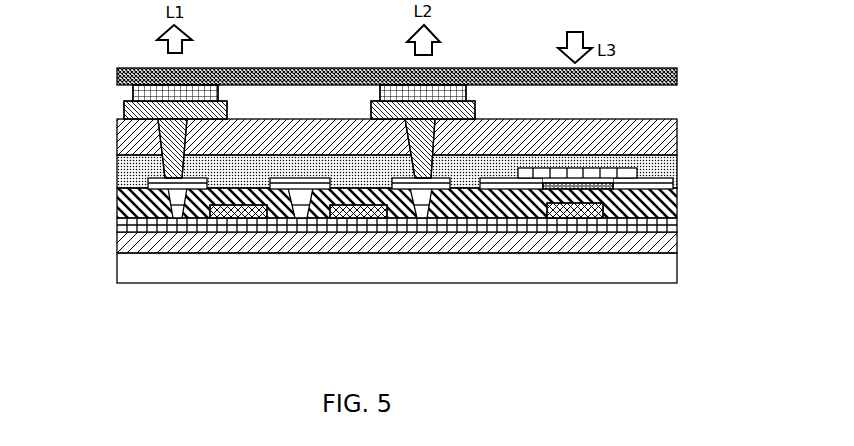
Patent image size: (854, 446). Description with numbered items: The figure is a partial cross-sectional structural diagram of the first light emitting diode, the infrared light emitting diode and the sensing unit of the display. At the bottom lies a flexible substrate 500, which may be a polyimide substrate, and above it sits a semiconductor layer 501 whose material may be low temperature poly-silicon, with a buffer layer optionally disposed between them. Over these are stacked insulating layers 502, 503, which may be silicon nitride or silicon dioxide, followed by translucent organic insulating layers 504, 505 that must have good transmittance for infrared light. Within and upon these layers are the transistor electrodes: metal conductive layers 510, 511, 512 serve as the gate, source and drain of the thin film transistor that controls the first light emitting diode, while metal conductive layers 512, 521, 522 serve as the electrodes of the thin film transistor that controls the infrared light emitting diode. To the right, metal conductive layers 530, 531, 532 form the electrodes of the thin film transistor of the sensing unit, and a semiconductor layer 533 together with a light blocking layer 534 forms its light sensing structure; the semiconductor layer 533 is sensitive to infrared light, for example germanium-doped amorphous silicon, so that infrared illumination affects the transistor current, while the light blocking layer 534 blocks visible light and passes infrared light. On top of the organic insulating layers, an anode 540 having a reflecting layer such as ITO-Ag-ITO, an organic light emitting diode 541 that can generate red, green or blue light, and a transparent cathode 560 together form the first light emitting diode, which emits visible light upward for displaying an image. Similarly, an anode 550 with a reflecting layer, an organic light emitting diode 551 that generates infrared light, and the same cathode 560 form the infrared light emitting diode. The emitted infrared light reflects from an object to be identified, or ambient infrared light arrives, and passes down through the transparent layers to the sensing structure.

The flexible substrate 500 is at (128, 269).
The semiconductor layer 501 is at (128, 243).
The insulating layer 502 is at (128, 223).
The insulating layer 503 is at (128, 203).
The translucent organic insulating layer 504 is at (128, 174).
The translucent organic insulating layer 505 is at (130, 139).
The metal conductive layer 510 is at (173, 222).
The metal conductive layer 511 is at (238, 210).
The metal conductive layer 512 is at (297, 222).
The metal conductive layer 521 is at (360, 210).
The metal conductive layer 522 is at (418, 225).
The metal conductive layer 530 is at (511, 182).
The metal conductive layer 531 is at (577, 205).
The metal conductive layer 532 is at (642, 182).
The semiconductor layer 533 is at (605, 187).
The light blocking layer 534 is at (554, 173).
The anode 540 is at (130, 111).
The organic light emitting diode 541 is at (130, 92).
The anode 550 is at (372, 108).
The organic light emitting diode 551 is at (403, 105).
The cathode 560 is at (126, 76).